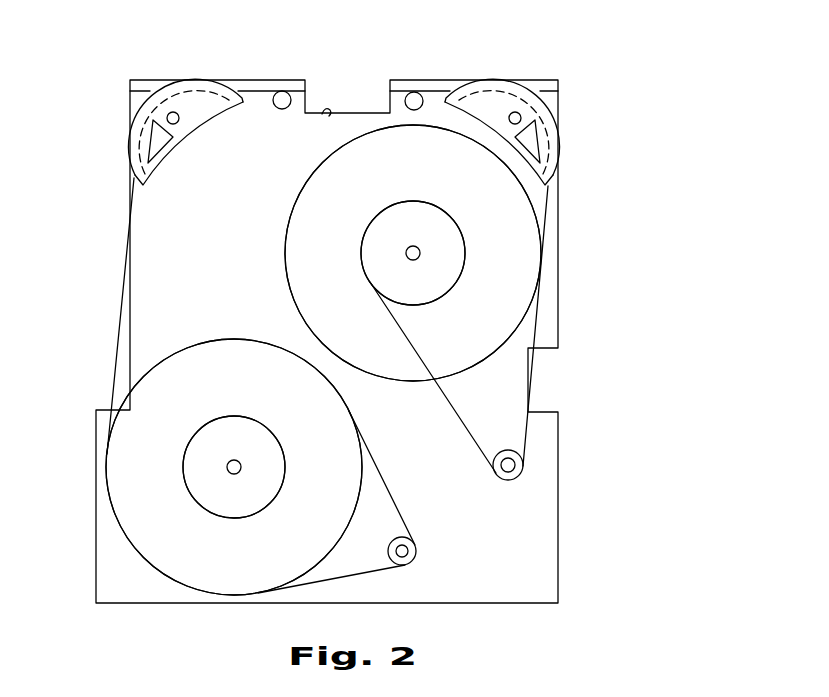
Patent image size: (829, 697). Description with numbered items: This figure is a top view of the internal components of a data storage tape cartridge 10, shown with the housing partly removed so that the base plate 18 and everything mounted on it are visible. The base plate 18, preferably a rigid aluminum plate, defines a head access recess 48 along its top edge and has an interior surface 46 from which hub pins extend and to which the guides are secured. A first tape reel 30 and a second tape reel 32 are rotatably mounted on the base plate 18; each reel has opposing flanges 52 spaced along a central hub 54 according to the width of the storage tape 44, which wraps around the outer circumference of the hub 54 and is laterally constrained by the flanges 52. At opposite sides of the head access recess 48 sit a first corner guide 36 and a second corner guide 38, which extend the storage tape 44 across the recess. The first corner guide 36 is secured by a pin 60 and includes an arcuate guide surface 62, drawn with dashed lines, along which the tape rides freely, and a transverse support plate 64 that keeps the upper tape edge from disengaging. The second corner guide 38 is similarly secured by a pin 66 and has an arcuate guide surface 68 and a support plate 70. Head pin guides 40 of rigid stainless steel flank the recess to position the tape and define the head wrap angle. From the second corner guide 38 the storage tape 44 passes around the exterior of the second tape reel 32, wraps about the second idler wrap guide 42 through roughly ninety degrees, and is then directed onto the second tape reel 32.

The data storage tape cartridge 10 is at (590, 34).
The base plate 18 is at (565, 527).
The first tape reel 30 is at (545, 276).
The second tape reel 32 is at (115, 490).
The first corner guide 36 is at (541, 104).
The second corner guide 38 is at (156, 118).
The head pin guides 40 is at (282, 91).
The second idler wrap guide 42 is at (508, 481).
The storage tape 44 is at (456, 418).
The interior surface 46 is at (150, 287).
The head access recess 48 is at (322, 114).
The opposing flanges 52 is at (288, 245).
The central hub 54 is at (448, 284).
The pin 60 is at (517, 112).
The arcuate guide surface 62 is at (560, 100).
The support plate 64 is at (492, 100).
The pin 66 is at (177, 124).
The arcuate guide surface 68 is at (132, 104).
The support plate 70 is at (155, 175).